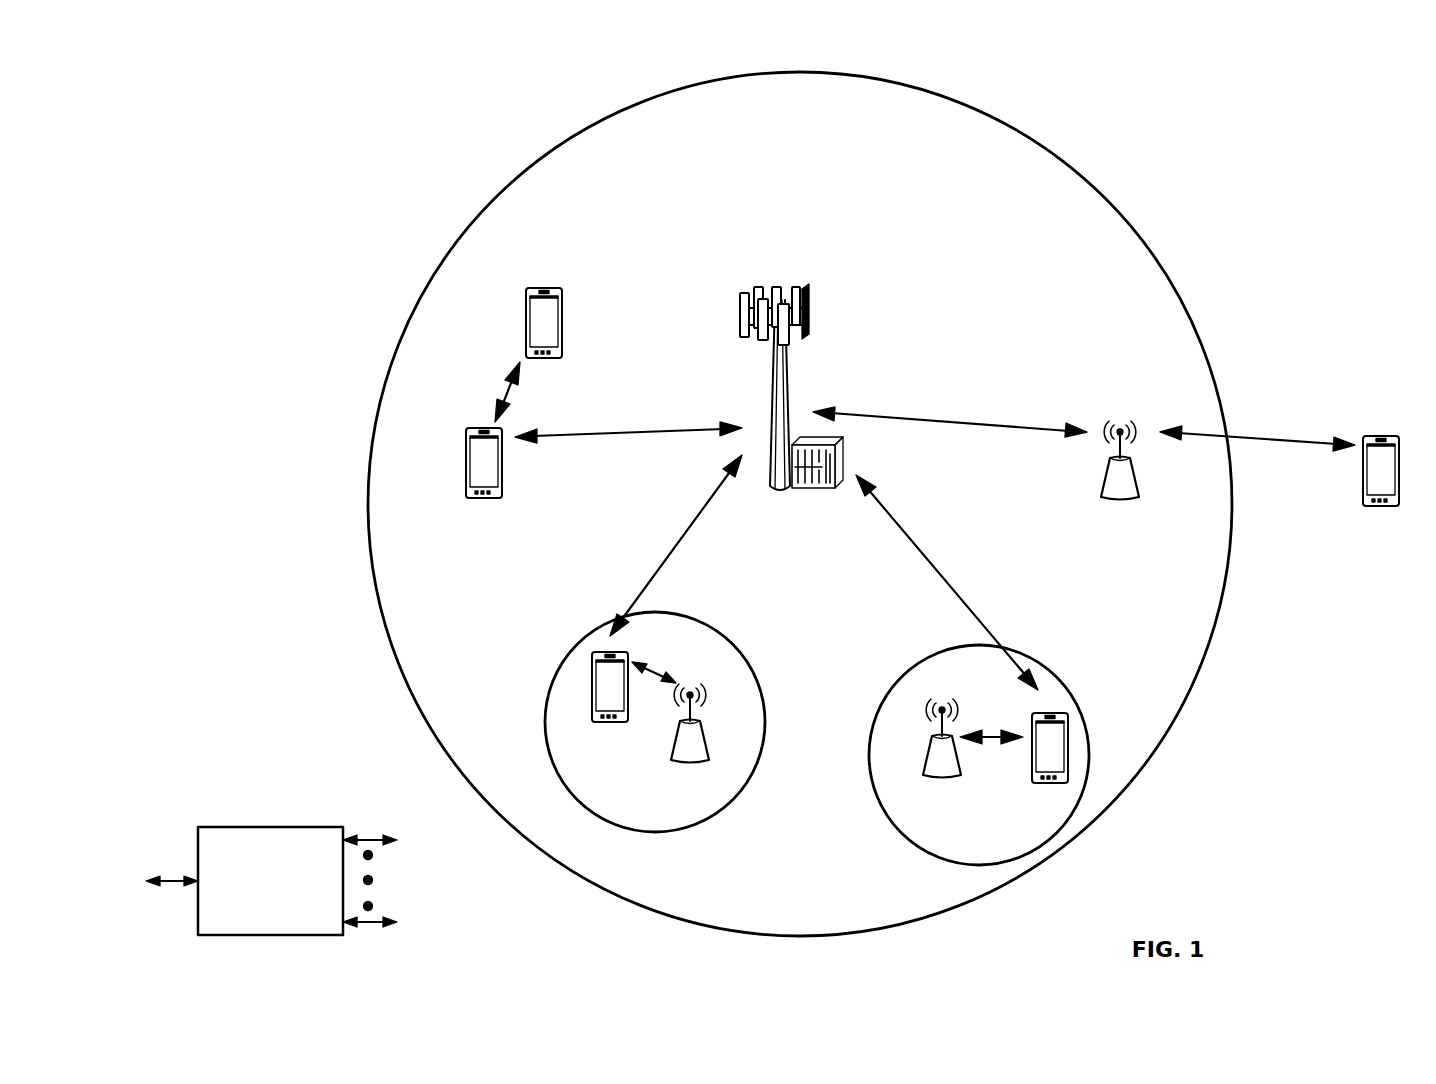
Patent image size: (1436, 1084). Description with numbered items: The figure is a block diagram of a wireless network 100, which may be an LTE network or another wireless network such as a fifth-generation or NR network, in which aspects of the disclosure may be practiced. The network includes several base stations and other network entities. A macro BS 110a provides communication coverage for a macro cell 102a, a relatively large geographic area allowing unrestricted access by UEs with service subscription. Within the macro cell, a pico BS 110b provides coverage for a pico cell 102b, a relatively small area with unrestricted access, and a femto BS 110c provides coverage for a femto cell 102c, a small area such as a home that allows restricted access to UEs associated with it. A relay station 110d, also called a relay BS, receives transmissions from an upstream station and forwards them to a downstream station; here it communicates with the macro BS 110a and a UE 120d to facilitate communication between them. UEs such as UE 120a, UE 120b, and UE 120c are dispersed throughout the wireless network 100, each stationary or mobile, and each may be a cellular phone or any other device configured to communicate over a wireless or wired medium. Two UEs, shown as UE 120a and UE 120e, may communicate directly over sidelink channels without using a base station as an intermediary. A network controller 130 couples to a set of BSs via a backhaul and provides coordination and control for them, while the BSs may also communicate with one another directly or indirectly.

The wireless network 100 is at (245, 64).
The macro cell 102a is at (1085, 178).
The pico cell 102b is at (745, 658).
The femto cell 102c is at (912, 668).
The macro BS 110a is at (784, 282).
The pico BS 110b is at (707, 748).
The femto BS 110c is at (928, 777).
The relay station 110d is at (1121, 421).
The UE 120a is at (467, 460).
The UE 120b is at (598, 722).
The UE 120c is at (1032, 783).
The UE 120d is at (1398, 437).
The UE 120e is at (527, 312).
The network controller 130 is at (268, 827).